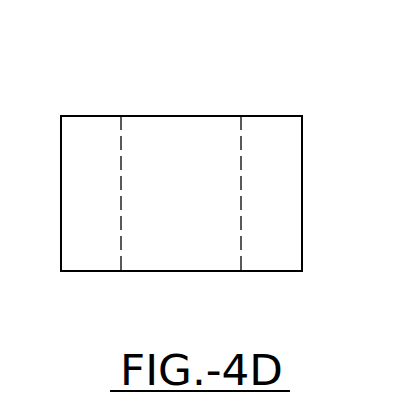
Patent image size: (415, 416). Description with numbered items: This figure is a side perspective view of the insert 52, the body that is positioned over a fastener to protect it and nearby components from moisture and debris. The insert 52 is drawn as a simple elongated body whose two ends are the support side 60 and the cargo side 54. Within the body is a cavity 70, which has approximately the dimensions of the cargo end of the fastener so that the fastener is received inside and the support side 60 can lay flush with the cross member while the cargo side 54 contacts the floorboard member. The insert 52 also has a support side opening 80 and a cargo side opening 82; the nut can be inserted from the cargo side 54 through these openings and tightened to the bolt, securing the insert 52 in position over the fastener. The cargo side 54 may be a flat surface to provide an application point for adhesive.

The cavity 70 is at (203, 208).
The cargo side 54 is at (90, 103).
The insert 52 is at (272, 108).
The support side 60 is at (110, 273).
The cargo side opening 82 is at (182, 137).
The support side opening 80 is at (195, 257).